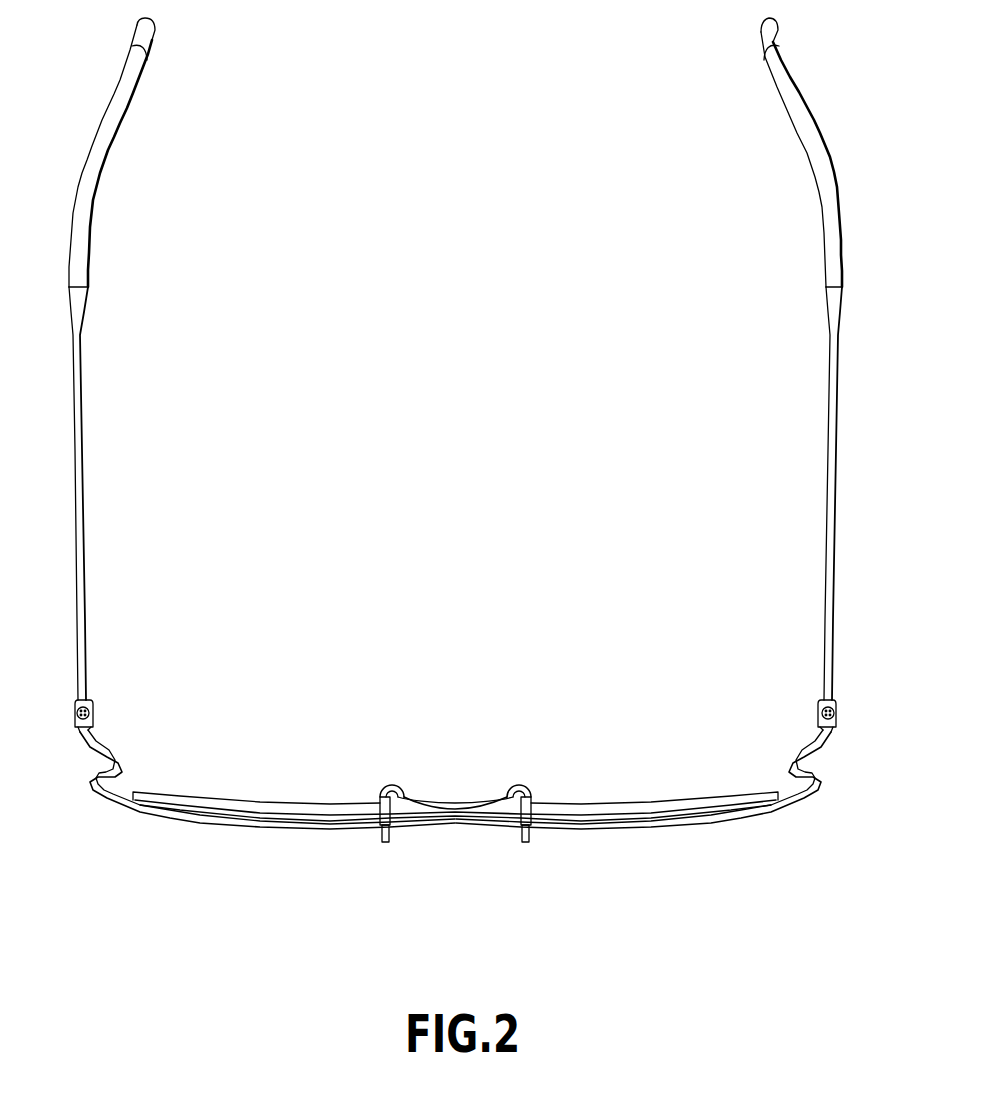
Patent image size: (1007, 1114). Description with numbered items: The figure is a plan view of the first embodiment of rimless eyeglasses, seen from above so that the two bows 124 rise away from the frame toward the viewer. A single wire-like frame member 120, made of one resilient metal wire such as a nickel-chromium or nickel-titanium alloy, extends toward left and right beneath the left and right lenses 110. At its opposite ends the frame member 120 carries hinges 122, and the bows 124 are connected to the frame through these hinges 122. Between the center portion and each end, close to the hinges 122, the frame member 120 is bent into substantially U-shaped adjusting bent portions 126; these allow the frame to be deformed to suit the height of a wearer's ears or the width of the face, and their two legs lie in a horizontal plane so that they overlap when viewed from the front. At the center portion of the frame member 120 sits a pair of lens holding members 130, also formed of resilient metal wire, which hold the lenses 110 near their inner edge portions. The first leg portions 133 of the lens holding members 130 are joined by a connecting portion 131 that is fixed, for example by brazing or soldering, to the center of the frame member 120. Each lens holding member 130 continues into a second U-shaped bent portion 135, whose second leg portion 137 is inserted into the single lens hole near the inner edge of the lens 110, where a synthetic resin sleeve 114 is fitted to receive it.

The lens 110 is at (258, 803).
The sleeve 114 is at (384, 843).
The frame member 120 is at (456, 823).
The hinge 122 is at (836, 705).
The bow 124 is at (838, 445).
The adjusting bent portion 126 is at (795, 755).
The lens holding member 130 is at (386, 772).
The connecting portion 131 is at (452, 798).
The first leg portion of the first U-shaped bent portion 133 is at (503, 825).
The second U-shaped bent portion 135 is at (513, 772).
The second leg portion of the second U-shaped bent portion 137 is at (537, 789).